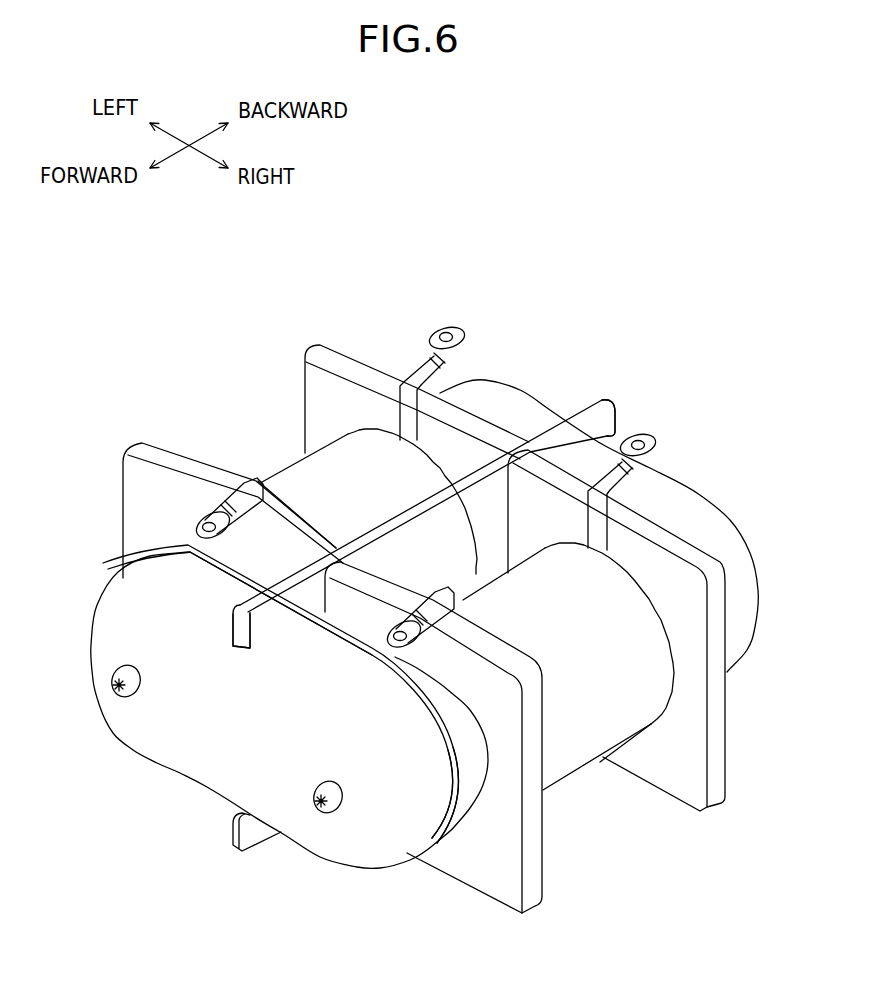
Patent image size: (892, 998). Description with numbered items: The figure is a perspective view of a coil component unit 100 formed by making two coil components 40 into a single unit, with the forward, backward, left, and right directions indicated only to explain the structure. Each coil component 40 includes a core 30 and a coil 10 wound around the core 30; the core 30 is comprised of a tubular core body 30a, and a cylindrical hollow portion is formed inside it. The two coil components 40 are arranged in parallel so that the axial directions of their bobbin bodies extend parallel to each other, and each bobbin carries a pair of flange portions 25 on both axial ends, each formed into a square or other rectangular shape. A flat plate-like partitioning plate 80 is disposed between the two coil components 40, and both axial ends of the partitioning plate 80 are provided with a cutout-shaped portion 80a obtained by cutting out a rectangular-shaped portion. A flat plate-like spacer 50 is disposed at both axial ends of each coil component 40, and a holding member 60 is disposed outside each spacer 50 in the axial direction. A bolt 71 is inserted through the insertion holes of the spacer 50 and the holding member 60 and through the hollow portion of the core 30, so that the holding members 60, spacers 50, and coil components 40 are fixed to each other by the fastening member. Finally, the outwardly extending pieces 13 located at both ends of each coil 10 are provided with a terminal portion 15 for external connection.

The coil component unit 100 is at (398, 197).
The coil 10 is at (300, 462).
The outwardly extending piece 13 is at (243, 484).
The terminal portion 15 is at (200, 527).
The flange portion 25 is at (322, 345).
The core 30 is at (190, 556).
The core body 30a is at (472, 798).
The coil component 40 is at (268, 468).
The spacer 50 is at (453, 797).
The holding member 60 is at (170, 743).
The bolt 71 is at (124, 697).
The partitioning plate 80 is at (240, 852).
The cutout-shaped portion 80a is at (253, 647).